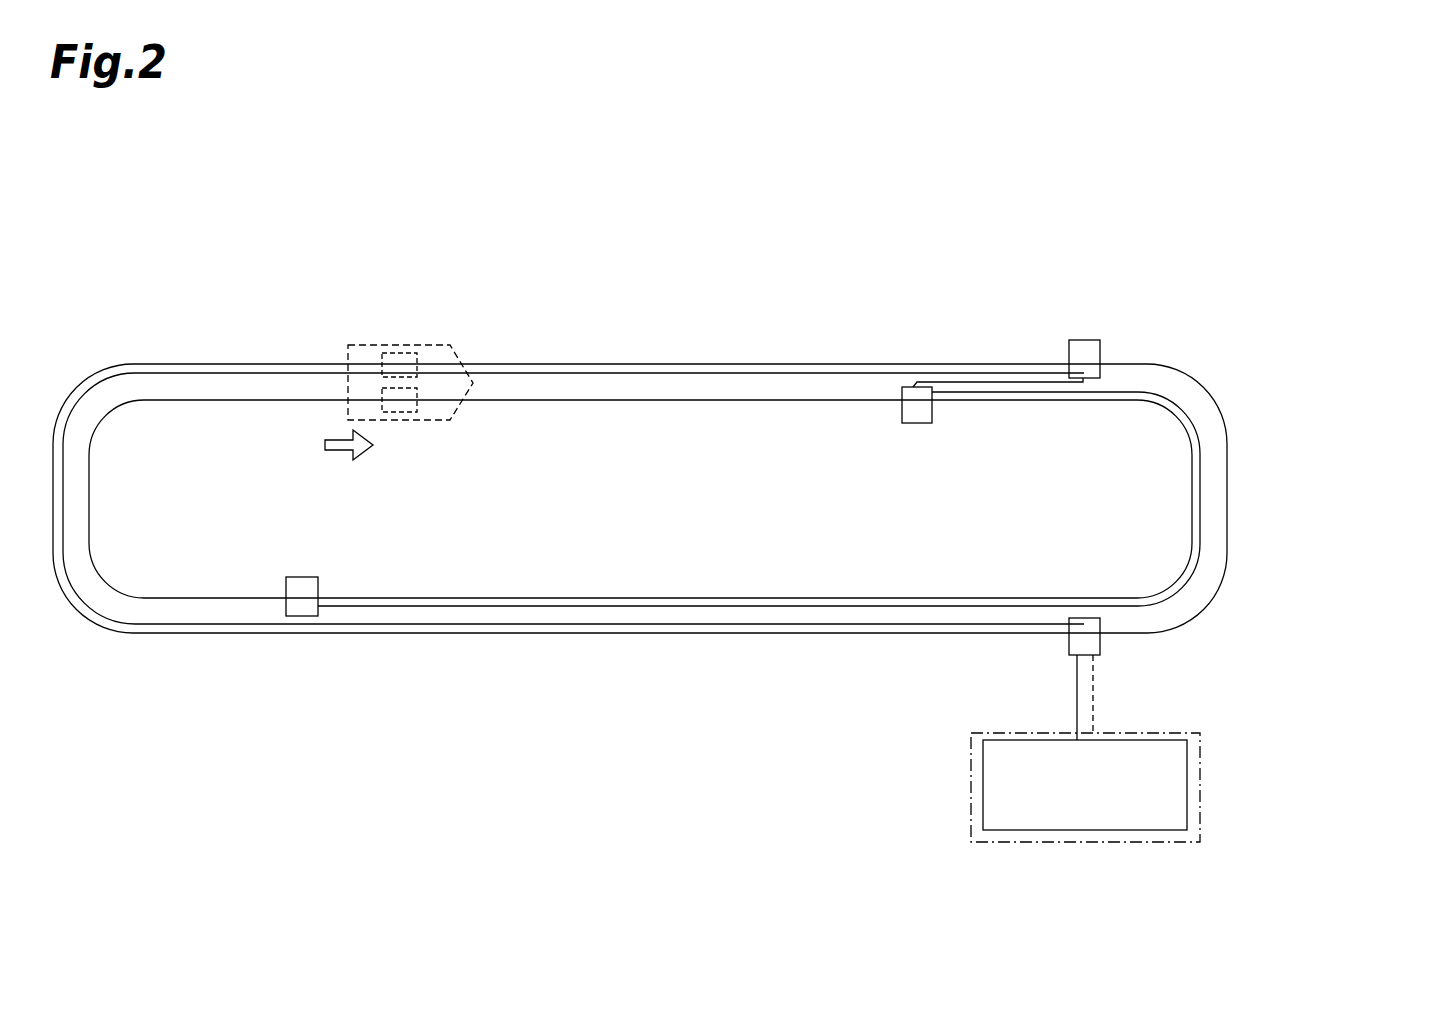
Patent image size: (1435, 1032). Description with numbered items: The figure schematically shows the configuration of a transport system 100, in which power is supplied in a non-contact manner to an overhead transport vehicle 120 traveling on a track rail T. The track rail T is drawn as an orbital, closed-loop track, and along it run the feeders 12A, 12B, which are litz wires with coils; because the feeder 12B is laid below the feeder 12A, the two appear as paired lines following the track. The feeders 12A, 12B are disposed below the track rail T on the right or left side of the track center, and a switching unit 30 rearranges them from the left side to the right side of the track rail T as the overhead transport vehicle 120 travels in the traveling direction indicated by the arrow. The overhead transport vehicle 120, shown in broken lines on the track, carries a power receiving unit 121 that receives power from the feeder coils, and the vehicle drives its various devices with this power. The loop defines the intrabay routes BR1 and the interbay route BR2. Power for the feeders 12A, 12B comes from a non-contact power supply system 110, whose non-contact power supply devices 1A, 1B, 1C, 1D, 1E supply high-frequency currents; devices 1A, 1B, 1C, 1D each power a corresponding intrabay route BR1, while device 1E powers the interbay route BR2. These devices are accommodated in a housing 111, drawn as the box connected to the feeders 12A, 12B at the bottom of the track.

The transport system 100 is at (734, 560).
The track rail T is at (640, 508).
The feeder 12A is at (640, 518).
The feeder 12B is at (1095, 683).
The intrabay route BR1 is at (640, 499).
The interbay route BR2 is at (710, 518).
The switching unit 30 is at (1082, 344).
The overhead transport vehicle 120 is at (399, 376).
The power receiving unit 121 is at (392, 351).
The non-contact power supply system 110 is at (1193, 807).
The housing 111 is at (1124, 842).
The non-contact power supply device 1A is at (1199, 765).
The non-contact power supply device 1B is at (1199, 765).
The non-contact power supply device 1C is at (1199, 765).
The non-contact power supply device 1D is at (1199, 765).
The non-contact power supply device 1E is at (1163, 733).